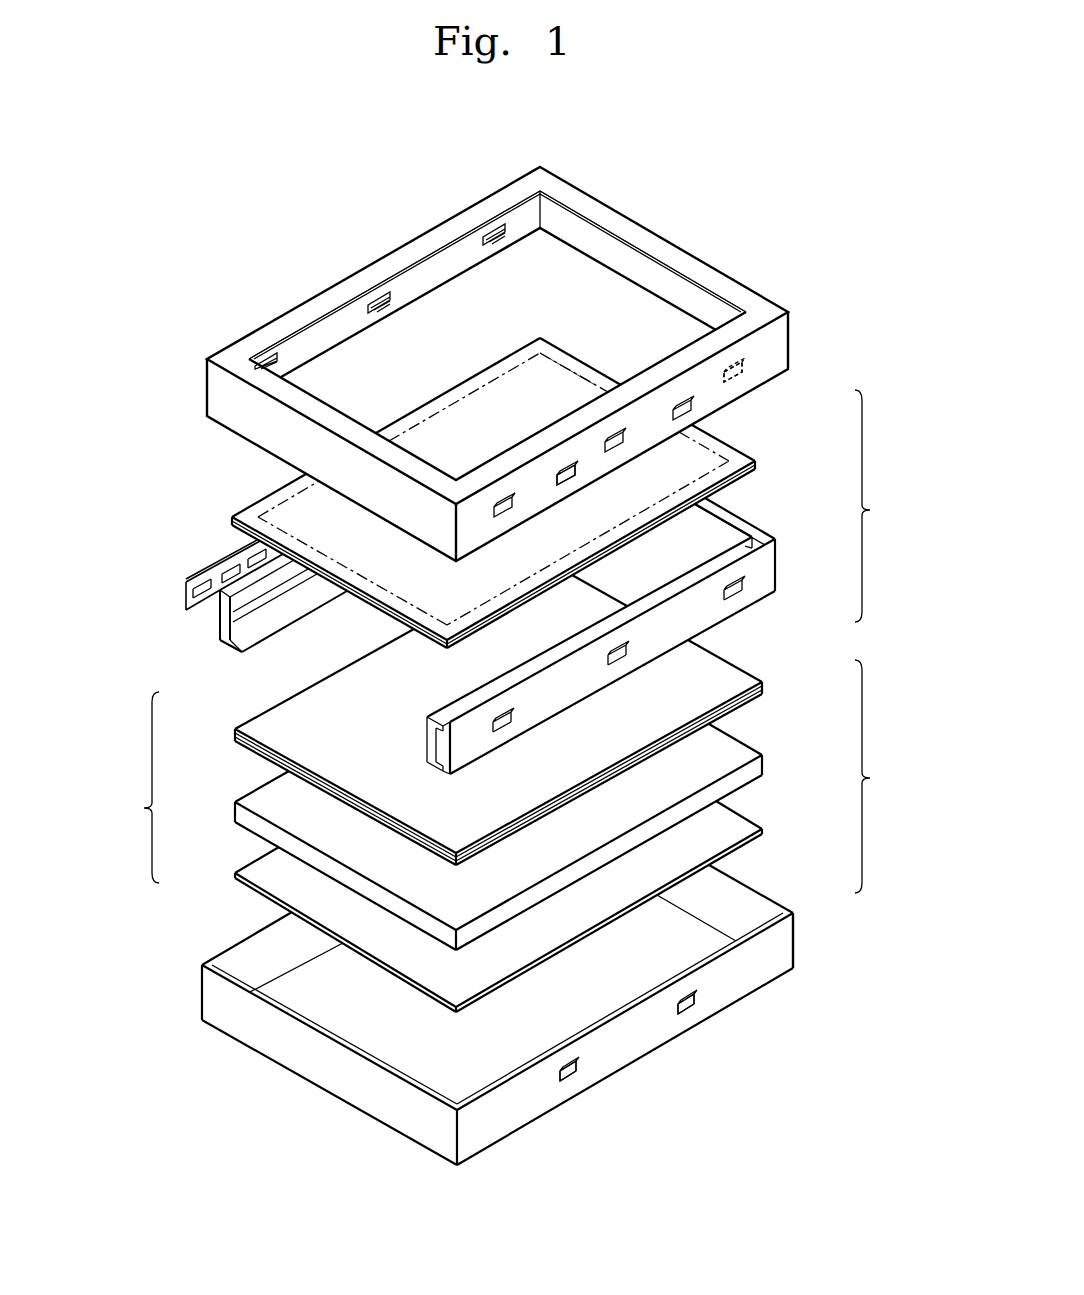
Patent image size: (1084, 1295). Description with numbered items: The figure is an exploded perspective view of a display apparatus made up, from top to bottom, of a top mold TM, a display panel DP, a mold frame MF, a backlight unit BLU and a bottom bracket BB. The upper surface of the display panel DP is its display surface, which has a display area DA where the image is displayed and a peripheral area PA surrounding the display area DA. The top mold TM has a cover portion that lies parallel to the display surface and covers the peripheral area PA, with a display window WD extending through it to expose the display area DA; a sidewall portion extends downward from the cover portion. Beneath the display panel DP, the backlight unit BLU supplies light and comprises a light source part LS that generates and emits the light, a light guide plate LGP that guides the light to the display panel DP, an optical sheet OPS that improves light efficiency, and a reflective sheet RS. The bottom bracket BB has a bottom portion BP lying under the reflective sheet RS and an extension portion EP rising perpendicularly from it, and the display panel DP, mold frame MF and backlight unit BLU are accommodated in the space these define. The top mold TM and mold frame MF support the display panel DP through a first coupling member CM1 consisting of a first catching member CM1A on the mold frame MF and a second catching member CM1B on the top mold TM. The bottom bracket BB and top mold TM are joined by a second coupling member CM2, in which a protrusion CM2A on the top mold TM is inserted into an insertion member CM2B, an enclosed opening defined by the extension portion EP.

The top mold TM is at (222, 388).
The display window WD is at (316, 338).
The display area DA is at (467, 407).
The peripheral area PA is at (582, 370).
The second catching member CM1B is at (748, 368).
The first coupling member CM1 is at (881, 506).
The first catching member CM1A is at (748, 588).
The protrusion CM2A is at (575, 478).
The second coupling member CM2 is at (881, 776).
The insertion member CM2B is at (695, 998).
The display panel DP is at (233, 518).
The mold frame MF is at (247, 582).
The light source part LS is at (172, 606).
The optical sheet OPS is at (235, 730).
The light guide plate LGP is at (235, 806).
The reflective sheet RS is at (235, 874).
The backlight unit BLU is at (132, 787).
The bottom bracket BB is at (198, 993).
The extension portion EP is at (786, 951).
The bottom portion BP is at (533, 1023).